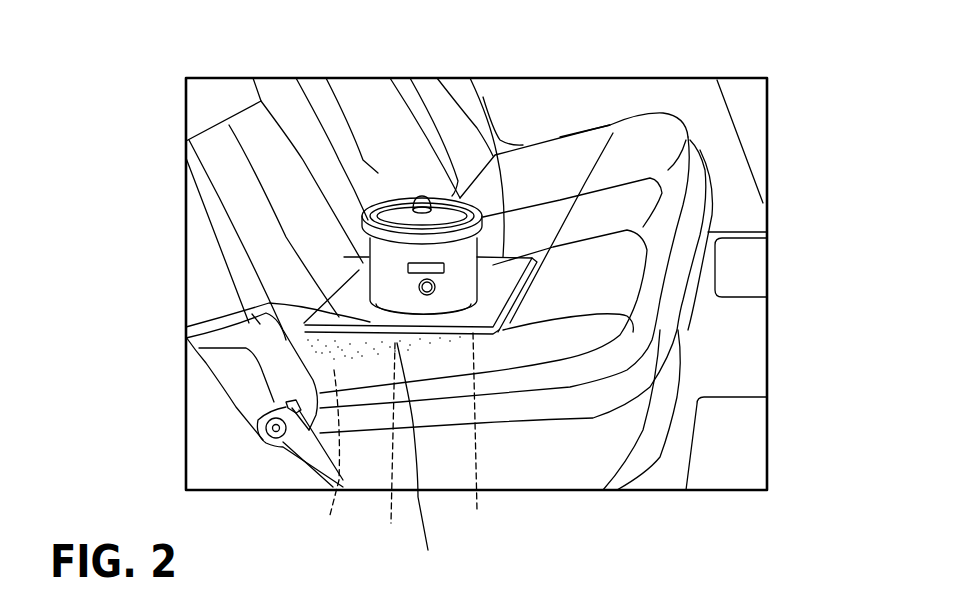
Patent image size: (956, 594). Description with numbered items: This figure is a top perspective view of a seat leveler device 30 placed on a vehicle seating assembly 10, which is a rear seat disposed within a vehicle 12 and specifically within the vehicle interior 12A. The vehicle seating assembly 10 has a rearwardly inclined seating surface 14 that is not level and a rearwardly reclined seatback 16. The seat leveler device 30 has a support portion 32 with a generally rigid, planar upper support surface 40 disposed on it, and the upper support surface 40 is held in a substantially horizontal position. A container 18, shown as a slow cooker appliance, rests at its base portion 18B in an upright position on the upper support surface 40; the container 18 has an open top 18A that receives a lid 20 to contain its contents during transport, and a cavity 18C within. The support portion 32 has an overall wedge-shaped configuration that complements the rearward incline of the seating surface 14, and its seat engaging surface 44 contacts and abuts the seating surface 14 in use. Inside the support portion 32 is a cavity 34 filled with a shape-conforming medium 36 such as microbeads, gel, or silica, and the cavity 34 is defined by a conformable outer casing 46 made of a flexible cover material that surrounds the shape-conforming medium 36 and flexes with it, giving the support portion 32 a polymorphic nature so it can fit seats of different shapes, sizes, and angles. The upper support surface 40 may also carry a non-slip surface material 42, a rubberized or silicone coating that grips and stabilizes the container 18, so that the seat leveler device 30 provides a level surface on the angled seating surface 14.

The vehicle seating assembly 10 is at (543, 113).
The vehicle 12 is at (733, 347).
The vehicle interior 12A is at (720, 112).
The seating surface 14 is at (585, 332).
The seatback 16 is at (223, 170).
The container 18 is at (352, 270).
The open top 18A is at (367, 222).
The base portion 18B is at (252, 314).
The cavity 18C is at (463, 435).
The lid 20 is at (388, 215).
The seat leveler device 30 is at (314, 348).
The support portion 32 is at (306, 345).
The cavity 34 is at (385, 449).
The shape-conforming medium 36 is at (327, 455).
The upper support surface 40 is at (460, 195).
The non-slip surface material 42 is at (490, 293).
The seat engaging surface 44 is at (418, 459).
The outer casing 46 is at (262, 418).